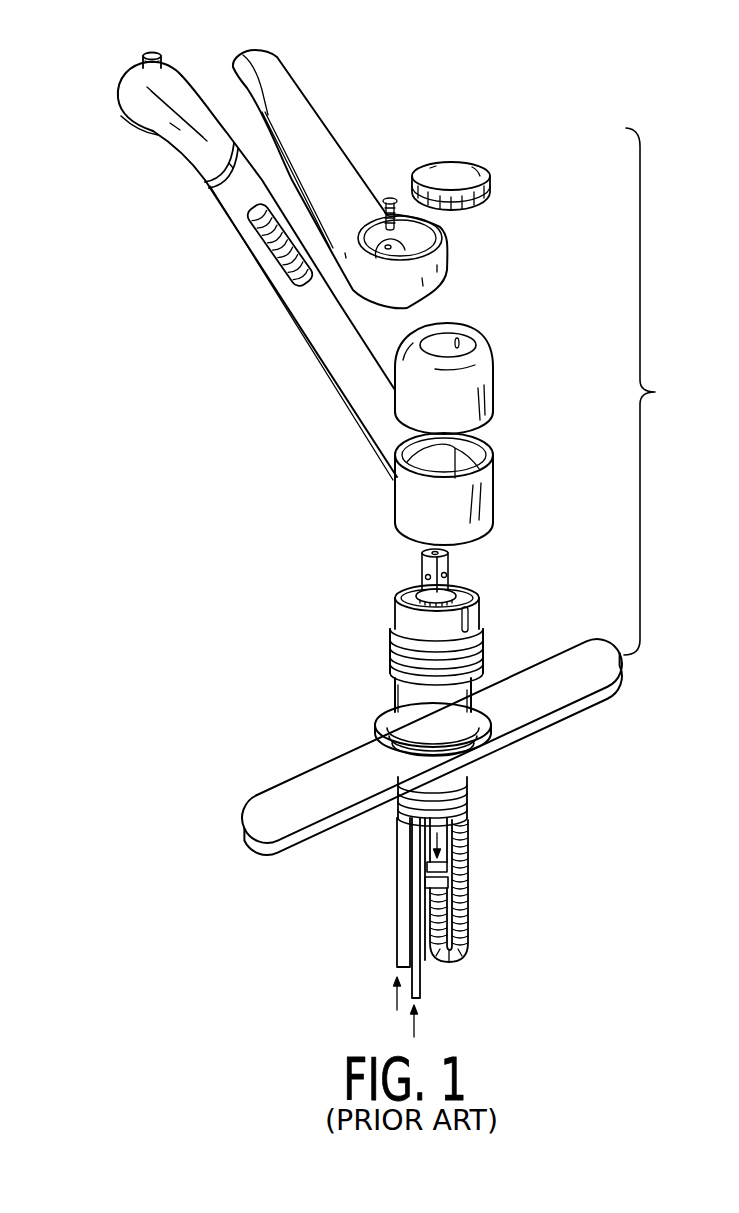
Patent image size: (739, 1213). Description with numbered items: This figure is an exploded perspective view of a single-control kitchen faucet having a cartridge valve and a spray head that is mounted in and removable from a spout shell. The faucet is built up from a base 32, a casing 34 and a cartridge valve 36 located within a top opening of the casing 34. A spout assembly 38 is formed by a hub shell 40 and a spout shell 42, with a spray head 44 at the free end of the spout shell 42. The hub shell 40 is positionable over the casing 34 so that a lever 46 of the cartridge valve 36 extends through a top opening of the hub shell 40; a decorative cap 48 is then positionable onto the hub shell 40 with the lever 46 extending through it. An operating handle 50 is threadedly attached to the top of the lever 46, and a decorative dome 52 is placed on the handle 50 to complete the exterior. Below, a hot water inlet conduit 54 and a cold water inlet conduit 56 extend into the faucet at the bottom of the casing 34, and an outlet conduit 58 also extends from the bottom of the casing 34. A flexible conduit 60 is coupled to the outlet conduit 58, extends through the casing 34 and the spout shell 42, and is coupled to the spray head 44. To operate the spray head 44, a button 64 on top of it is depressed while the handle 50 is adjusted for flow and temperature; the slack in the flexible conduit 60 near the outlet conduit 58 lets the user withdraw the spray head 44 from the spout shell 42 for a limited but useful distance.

The base 32 is at (290, 777).
The casing 34 is at (403, 693).
The cartridge valve 36 is at (404, 597).
The spout assembly 38 is at (307, 353).
The hub shell 40 is at (467, 498).
The spout shell 42 is at (237, 193).
The spray head 44 is at (121, 97).
The lever 46 is at (423, 572).
The decorative cap 48 is at (470, 394).
The operating handle 50 is at (297, 97).
The decorative dome 52 is at (449, 175).
The hot water inlet conduit 54 is at (400, 889).
The cold water inlet conduit 56 is at (413, 986).
The outlet conduit 58 is at (444, 839).
The flexible conduit 60 is at (275, 252).
The button 64 is at (151, 53).